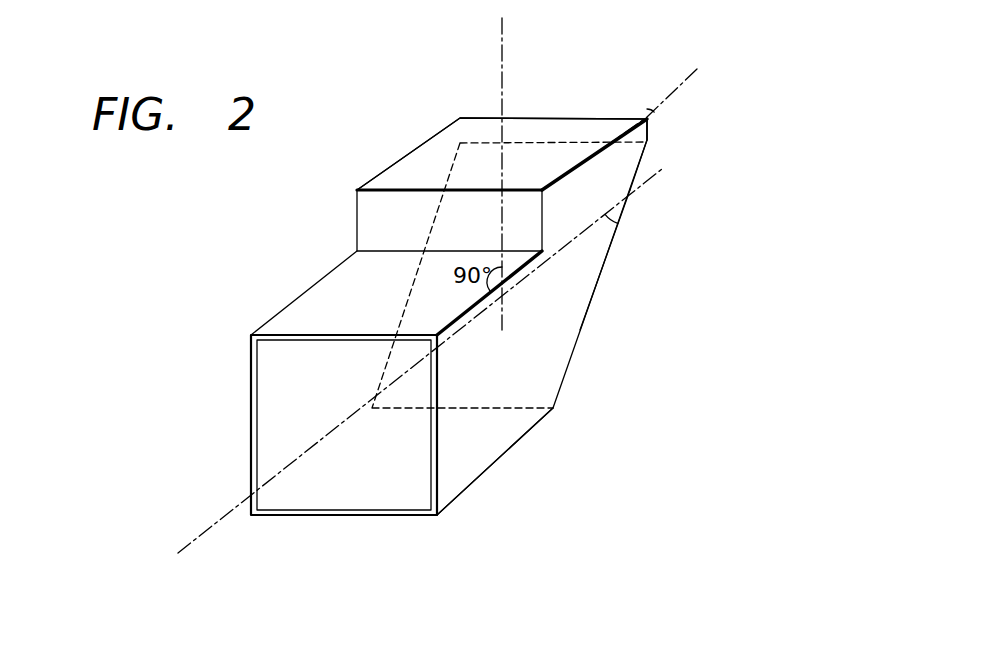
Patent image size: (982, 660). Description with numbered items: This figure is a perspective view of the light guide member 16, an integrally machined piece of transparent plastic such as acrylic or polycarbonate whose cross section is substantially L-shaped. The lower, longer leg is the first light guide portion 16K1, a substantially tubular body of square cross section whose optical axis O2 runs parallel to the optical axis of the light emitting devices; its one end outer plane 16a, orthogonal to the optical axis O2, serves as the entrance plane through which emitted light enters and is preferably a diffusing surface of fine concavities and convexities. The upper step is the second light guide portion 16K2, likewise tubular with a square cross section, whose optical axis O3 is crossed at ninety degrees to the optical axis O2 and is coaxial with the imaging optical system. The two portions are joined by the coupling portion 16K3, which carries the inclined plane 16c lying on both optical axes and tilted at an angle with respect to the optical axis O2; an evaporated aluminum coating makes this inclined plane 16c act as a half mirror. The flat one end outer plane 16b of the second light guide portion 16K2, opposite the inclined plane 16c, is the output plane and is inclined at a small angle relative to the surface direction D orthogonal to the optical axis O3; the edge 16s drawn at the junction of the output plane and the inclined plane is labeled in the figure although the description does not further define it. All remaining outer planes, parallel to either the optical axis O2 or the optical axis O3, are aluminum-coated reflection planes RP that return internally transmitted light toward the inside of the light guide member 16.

The light guide member 16 is at (808, 207).
The one end outer plane 16a is at (387, 495).
The one end outer plane 16b is at (538, 133).
The inclined plane 16c is at (603, 330).
The upper edge of cut face 16s is at (592, 118).
The first light guide portion 16K1 is at (528, 445).
The second light guide portion 16K2 is at (649, 156).
The coupling portion 16K3 is at (602, 298).
The optical axis O2 is at (213, 523).
The optical axis O3 is at (500, 38).
The surface direction D is at (668, 82).
The reflection planes RP is at (384, 214).